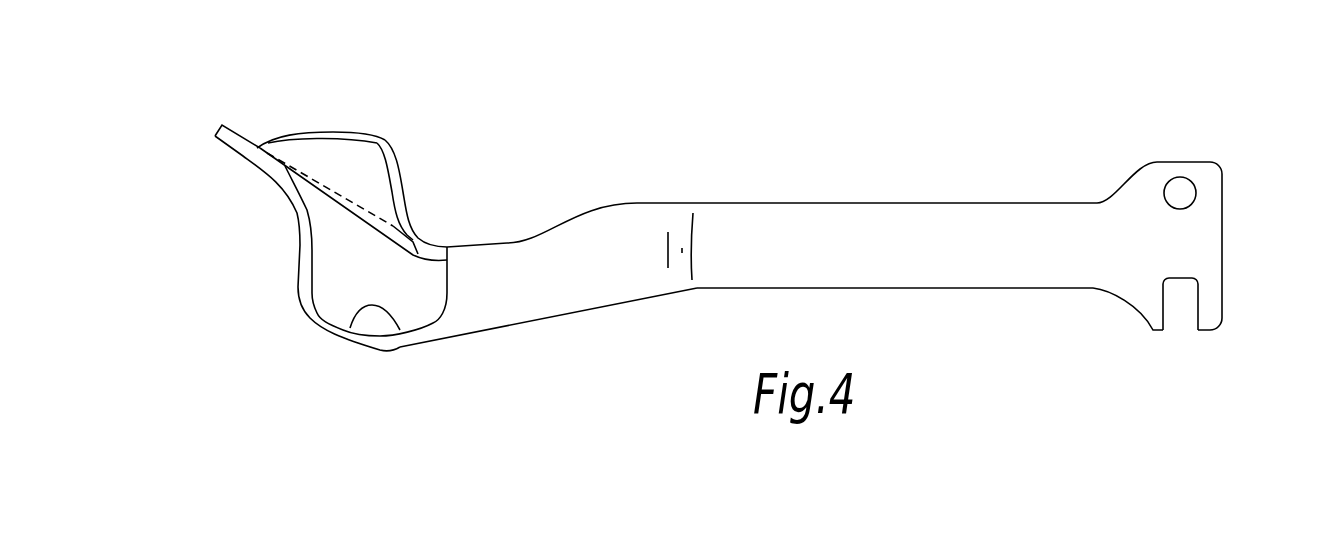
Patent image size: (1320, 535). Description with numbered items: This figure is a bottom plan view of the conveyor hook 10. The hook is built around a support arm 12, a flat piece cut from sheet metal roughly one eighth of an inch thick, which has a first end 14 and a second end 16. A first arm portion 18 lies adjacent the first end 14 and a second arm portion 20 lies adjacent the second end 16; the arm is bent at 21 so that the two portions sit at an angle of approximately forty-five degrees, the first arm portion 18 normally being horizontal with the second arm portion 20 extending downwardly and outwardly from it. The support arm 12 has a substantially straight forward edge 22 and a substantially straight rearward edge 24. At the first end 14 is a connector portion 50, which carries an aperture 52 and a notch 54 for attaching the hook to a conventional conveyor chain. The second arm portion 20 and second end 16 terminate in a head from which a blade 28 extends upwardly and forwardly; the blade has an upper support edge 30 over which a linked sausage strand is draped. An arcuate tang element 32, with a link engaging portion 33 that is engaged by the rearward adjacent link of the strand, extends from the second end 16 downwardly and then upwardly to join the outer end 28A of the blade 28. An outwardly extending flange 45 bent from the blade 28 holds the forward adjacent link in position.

The conveyor hook 10 is at (765, 212).
The support arm 12 is at (748, 252).
The first end 14 is at (1204, 250).
The second end 16 is at (493, 181).
The first arm portion 18 is at (1041, 189).
The second arm portion 20 is at (548, 337).
The bend 21 is at (716, 207).
The forward edge 22 is at (802, 166).
The rearward edge 24 is at (895, 332).
The blade 28 is at (346, 211).
The outer end of the blade 28A is at (239, 79).
The upper support edge 30 is at (338, 221).
The arcuate tang element 32 is at (331, 264).
The link engaging portion 33 is at (393, 358).
The flange 45 is at (352, 85).
The connector portion 50 is at (1252, 246).
The aperture 52 is at (1146, 154).
The notch 54 is at (1205, 340).